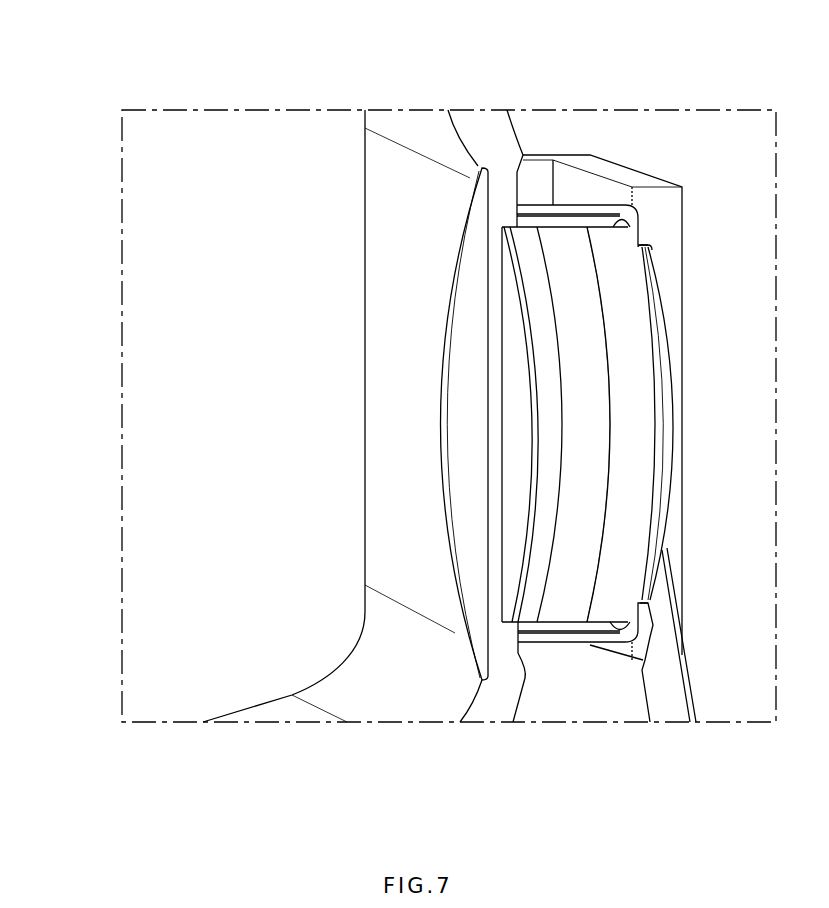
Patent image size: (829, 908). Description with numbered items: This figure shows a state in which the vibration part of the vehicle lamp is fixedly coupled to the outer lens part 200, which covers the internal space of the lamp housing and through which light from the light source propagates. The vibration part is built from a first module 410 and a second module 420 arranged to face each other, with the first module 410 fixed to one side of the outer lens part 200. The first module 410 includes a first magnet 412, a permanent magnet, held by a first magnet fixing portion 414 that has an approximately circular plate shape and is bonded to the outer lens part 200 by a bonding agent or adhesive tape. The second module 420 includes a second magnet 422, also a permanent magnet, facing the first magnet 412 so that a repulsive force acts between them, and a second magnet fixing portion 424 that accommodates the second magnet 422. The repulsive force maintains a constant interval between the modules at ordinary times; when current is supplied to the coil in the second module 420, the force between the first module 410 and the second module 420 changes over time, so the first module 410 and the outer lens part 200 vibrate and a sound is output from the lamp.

The outer lens part 200 is at (395, 321).
The first module 410 is at (552, 47).
The first magnet 412 is at (565, 247).
The first magnet fixing portion 414 is at (535, 250).
The second module 420 is at (692, 47).
The second magnet 422 is at (620, 257).
The second magnet fixing portion 424 is at (608, 228).